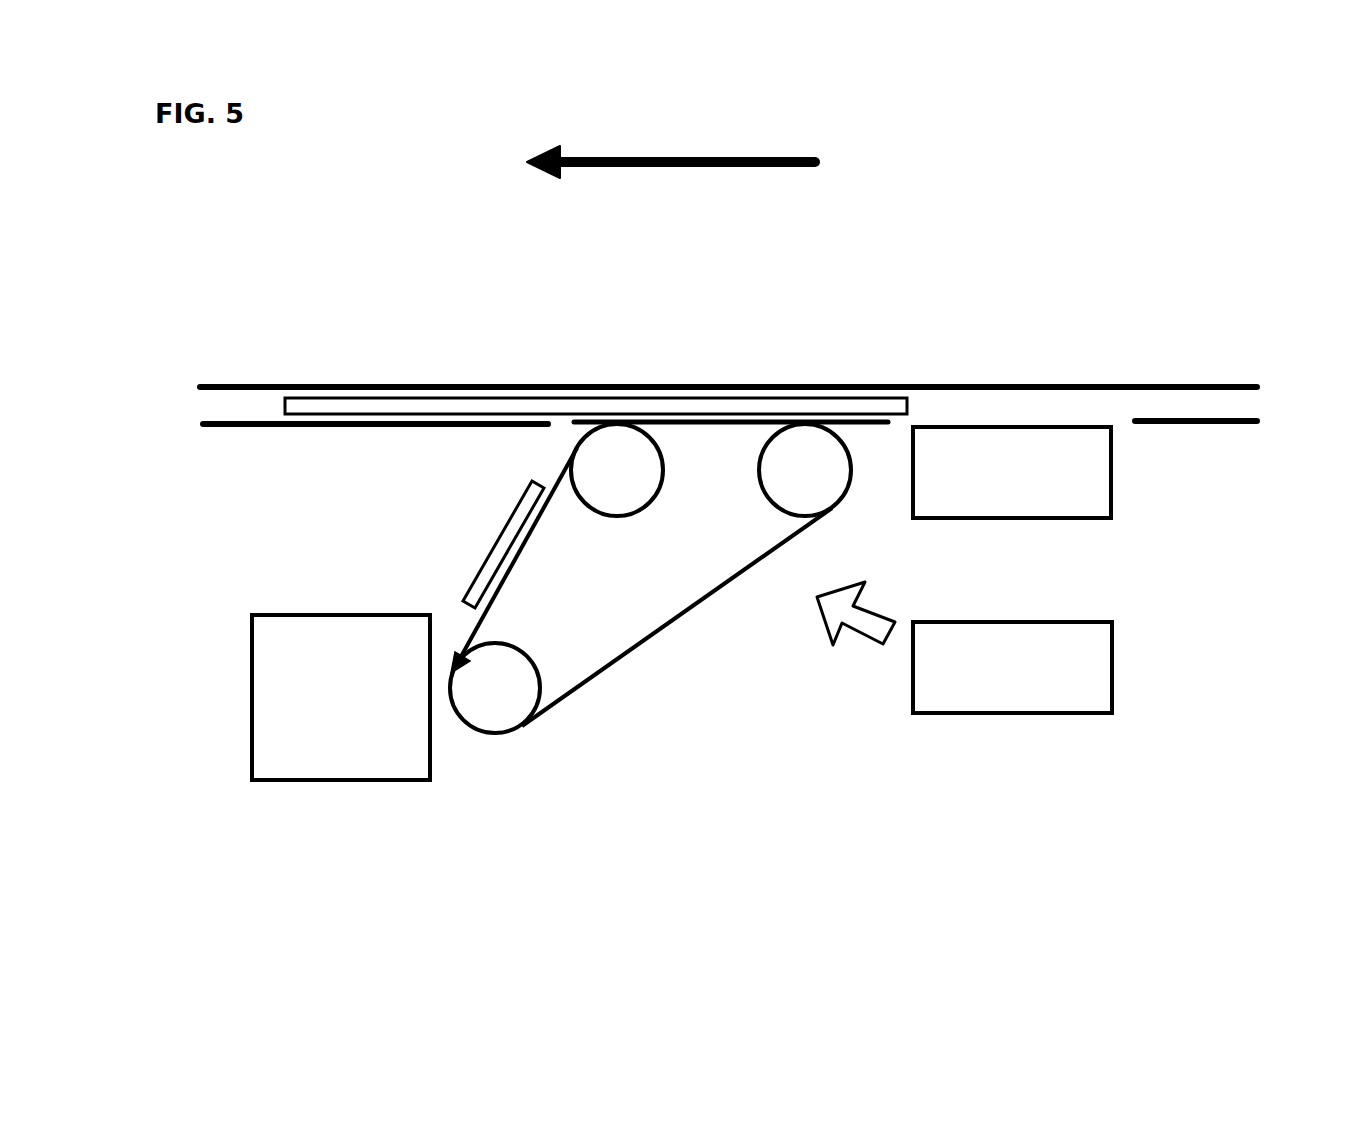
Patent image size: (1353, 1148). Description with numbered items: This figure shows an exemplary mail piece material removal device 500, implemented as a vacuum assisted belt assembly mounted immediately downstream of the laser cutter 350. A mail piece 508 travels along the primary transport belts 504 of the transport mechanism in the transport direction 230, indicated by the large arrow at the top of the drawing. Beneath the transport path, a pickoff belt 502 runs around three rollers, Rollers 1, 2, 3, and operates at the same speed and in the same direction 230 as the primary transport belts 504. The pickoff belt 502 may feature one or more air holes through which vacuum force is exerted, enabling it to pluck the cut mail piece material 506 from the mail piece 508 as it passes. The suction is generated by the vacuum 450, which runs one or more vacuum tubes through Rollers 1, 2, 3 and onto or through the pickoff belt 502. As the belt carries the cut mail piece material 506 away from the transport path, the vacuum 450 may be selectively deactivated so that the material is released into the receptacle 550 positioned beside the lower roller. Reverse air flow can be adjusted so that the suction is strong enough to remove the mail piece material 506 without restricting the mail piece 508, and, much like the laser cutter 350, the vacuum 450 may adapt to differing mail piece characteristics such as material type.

The removal device 500 is at (775, 842).
The pickoff belt 502 is at (620, 672).
The primary transport belts 504 is at (192, 400).
The cut mail piece material 506 is at (488, 535).
The mail piece 508 is at (870, 388).
The direction 230 is at (673, 140).
The laser cutter 350 is at (1012, 472).
The vacuum 450 is at (964, 647).
The receptacle 550 is at (341, 697).
The roller 1 is at (805, 470).
The roller 2 is at (617, 470).
The roller 3 is at (495, 688).